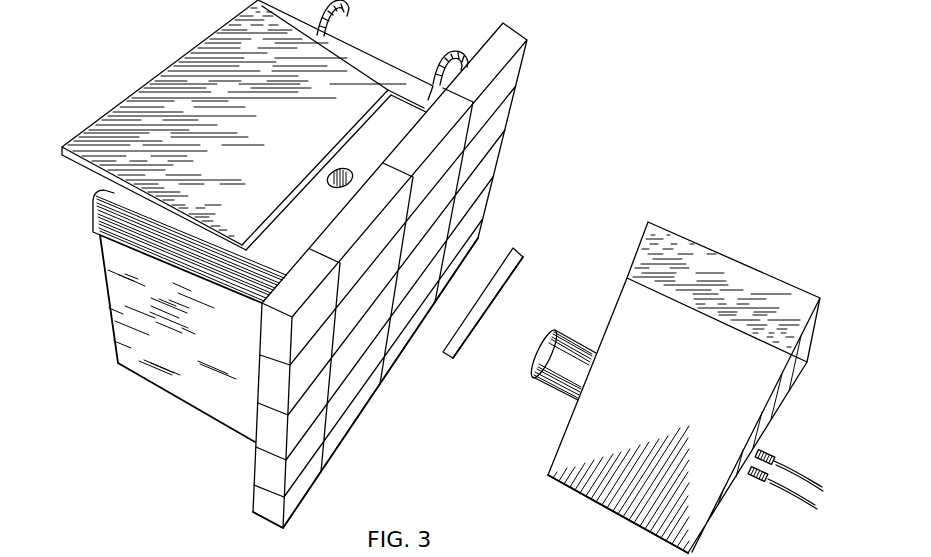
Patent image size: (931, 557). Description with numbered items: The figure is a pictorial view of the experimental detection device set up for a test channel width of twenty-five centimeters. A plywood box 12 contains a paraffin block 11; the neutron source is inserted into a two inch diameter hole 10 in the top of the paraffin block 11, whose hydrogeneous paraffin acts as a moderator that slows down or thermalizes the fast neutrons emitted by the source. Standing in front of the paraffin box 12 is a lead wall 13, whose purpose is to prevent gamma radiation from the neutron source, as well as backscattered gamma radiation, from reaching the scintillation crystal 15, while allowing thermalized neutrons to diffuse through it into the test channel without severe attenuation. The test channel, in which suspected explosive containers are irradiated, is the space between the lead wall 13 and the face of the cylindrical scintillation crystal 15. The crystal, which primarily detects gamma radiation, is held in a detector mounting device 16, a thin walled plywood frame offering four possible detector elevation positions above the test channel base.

The hole 10 is at (351, 168).
The paraffin block 11 is at (334, 170).
The box 12 is at (168, 395).
The lead wall 13 is at (342, 443).
The scintillation crystal 15 is at (550, 392).
The detector mounting device 16 is at (618, 518).